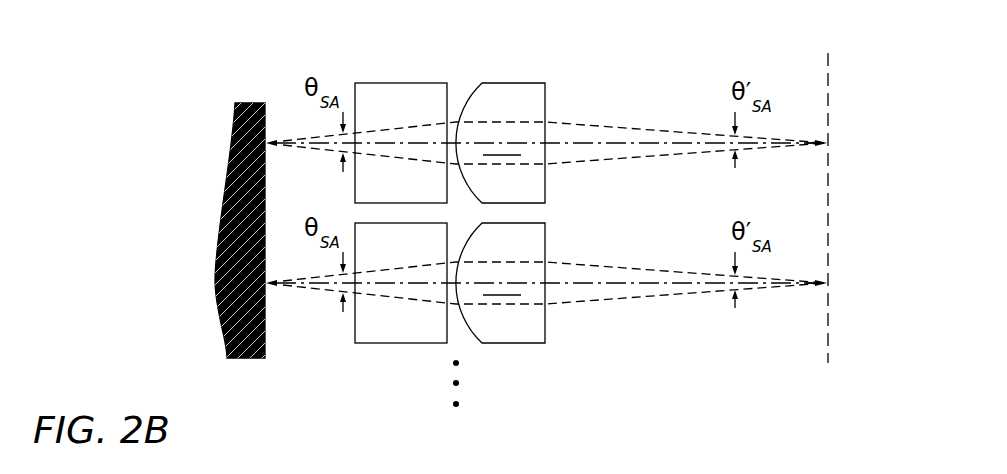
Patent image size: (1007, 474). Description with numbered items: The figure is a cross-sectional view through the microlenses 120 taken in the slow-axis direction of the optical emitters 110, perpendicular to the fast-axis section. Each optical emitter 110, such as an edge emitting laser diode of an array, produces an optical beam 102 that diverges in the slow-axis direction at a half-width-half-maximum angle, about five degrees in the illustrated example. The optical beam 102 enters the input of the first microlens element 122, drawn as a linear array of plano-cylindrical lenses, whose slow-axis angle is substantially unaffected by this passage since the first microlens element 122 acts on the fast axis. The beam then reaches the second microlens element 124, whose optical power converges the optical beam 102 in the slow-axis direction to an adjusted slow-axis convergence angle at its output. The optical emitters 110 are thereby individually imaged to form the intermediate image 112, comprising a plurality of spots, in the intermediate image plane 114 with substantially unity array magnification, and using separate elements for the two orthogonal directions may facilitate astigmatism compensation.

The optical emitter 110 is at (252, 103).
The first microlens element 122 is at (401, 83).
The second microlens element 124 is at (500, 178).
The optical beam 102 is at (501, 213).
The microlenses 120 is at (386, 215).
The intermediate image 112 is at (821, 132).
The intermediate image plane 114 is at (826, 345).